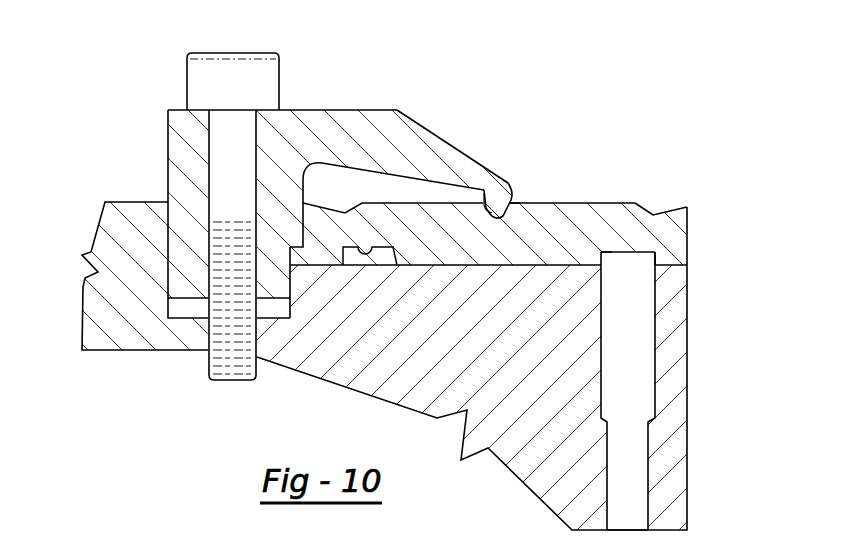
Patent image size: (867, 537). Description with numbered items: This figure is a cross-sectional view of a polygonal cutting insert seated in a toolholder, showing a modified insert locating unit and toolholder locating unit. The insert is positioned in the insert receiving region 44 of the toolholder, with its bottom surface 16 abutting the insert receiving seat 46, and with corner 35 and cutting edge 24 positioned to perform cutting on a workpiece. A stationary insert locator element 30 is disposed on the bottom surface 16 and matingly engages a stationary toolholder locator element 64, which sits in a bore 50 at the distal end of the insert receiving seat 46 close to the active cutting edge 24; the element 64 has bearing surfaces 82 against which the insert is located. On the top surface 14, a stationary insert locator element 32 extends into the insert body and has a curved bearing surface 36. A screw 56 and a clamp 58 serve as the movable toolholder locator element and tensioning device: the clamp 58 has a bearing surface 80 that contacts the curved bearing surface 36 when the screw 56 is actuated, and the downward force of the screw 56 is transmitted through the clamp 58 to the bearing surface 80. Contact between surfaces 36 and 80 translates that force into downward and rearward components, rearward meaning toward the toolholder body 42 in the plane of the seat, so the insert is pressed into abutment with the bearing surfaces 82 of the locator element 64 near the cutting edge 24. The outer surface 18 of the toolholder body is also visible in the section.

The top surface 14 is at (602, 198).
The bottom surface 16 is at (671, 282).
The outer surface 18 is at (702, 220).
The cutting edge 24 is at (690, 208).
The stationary insert locator element 30 is at (363, 255).
The stationary insert locator element 32 is at (481, 163).
The corner 35 is at (687, 205).
The curved bearing surface 36 is at (516, 198).
The toolholder body 42 is at (83, 320).
The insert receiving region 44 is at (688, 432).
The insert receiving seat 46 is at (566, 260).
The bore 50 is at (638, 503).
The screw 56 is at (252, 67).
The clamp 58 is at (380, 110).
The stationary toolholder locator element 64 is at (645, 355).
The bearing surface 80 is at (495, 217).
The bearing surface 82 is at (664, 257).